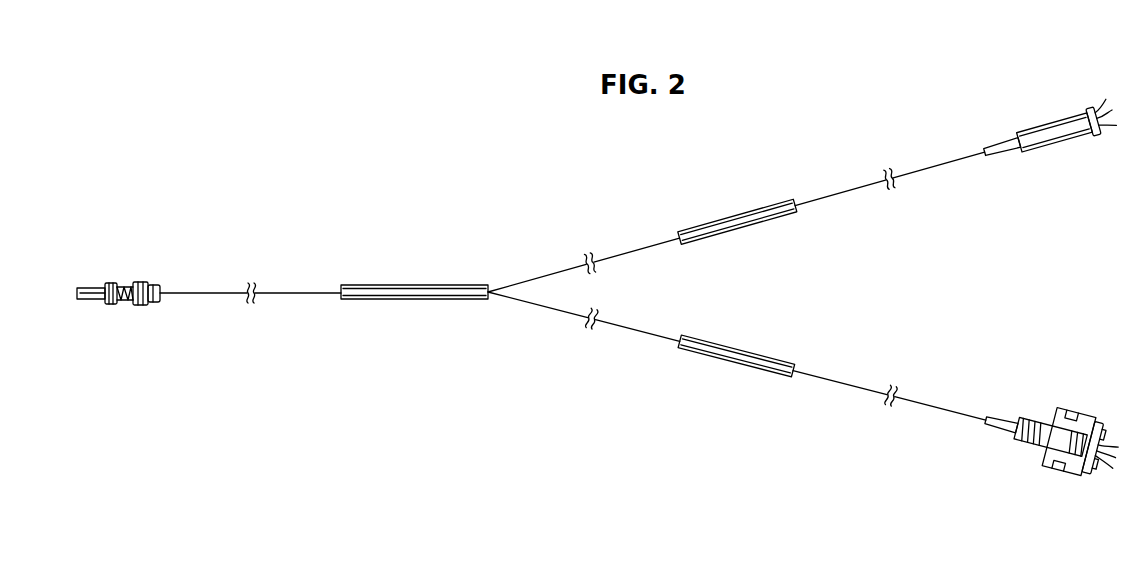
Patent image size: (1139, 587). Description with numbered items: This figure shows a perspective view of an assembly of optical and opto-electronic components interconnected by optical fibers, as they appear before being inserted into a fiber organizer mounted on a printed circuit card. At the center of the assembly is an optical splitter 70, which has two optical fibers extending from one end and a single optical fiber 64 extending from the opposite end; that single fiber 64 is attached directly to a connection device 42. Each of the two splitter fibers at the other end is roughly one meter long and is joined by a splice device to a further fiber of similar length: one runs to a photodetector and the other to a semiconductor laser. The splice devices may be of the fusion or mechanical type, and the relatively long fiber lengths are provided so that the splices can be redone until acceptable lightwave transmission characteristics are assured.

The connection device 42 is at (143, 282).
The optical fiber 64 is at (308, 288).
The optical splitter 70 is at (405, 288).